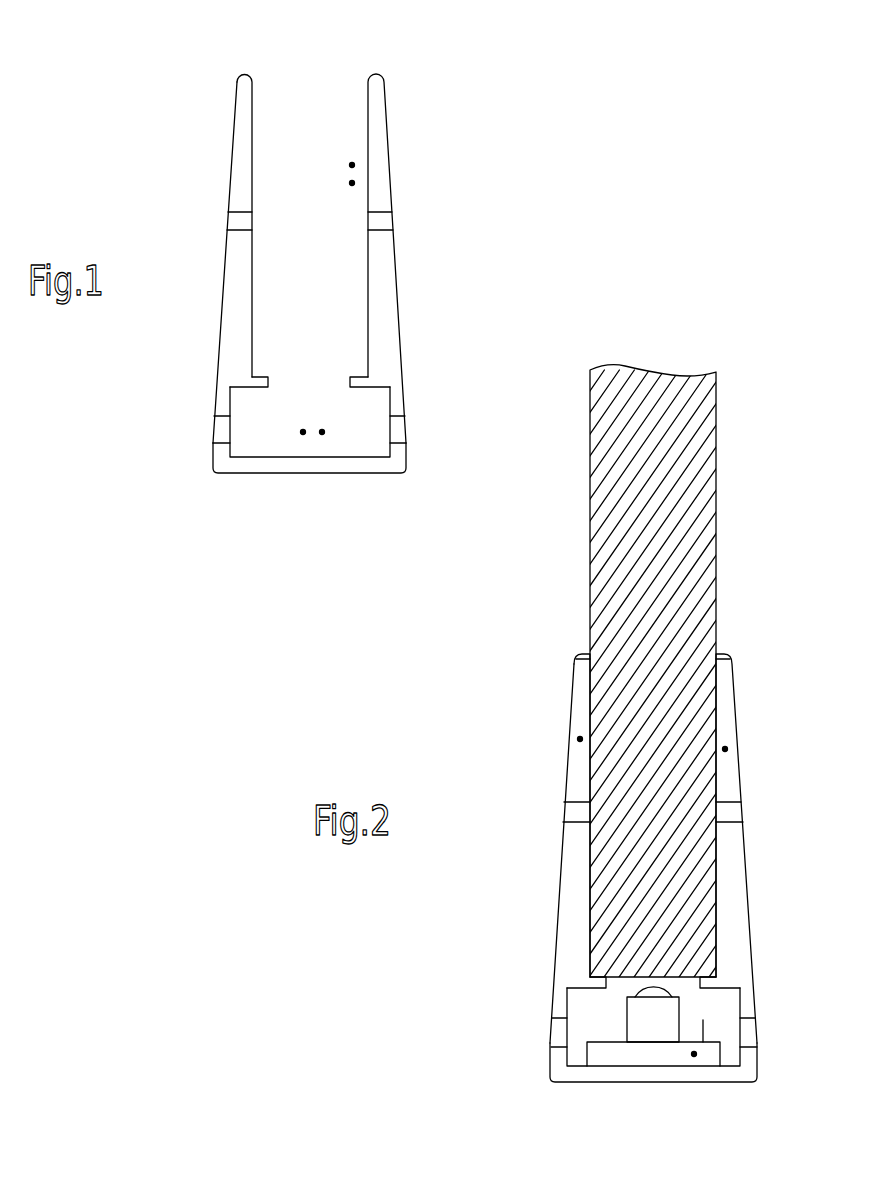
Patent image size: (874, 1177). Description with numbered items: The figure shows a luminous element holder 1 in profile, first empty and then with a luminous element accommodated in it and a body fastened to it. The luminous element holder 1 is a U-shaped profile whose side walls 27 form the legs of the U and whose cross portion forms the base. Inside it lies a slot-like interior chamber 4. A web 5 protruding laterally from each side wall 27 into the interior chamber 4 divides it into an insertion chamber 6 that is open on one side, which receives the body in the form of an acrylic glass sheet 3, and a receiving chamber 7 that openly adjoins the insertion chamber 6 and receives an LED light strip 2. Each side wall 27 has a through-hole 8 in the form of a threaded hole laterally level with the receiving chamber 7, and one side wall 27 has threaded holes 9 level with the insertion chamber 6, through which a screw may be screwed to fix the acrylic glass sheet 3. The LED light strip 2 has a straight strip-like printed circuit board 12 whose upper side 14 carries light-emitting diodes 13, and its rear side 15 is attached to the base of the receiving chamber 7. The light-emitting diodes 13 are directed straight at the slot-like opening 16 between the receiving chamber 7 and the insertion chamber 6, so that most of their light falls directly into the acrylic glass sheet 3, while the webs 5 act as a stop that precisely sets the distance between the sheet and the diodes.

In FIG. 1, the luminous element holder 1 is at (509, 136).
In FIG. 2, the luminous element holder 1 is at (762, 685).
In FIG. 2, the LED light strip 2 is at (652, 1055).
In FIG. 2, the acrylic glass sheet 3 is at (700, 466).
In FIG. 1, the interior chamber 4 is at (319, 121).
In FIG. 2, the interior chamber 4 is at (703, 777).
In FIG. 1, the web 5 is at (263, 380).
In FIG. 2, the web 5 is at (600, 978).
In FIG. 1, the insertion chamber 6 is at (352, 183).
In FIG. 2, the insertion chamber 6 is at (703, 757).
In FIG. 1, the receiving chamber 7 is at (322, 432).
In FIG. 2, the receiving chamber 7 is at (607, 1038).
In FIG. 1, the through-hole 8 is at (222, 428).
In FIG. 2, the through-hole 8 is at (560, 1037).
In FIG. 1, the threaded hole 9 is at (252, 220).
In FIG. 2, the threaded hole 9 is at (565, 815).
In FIG. 2, the printed circuit board 12 is at (694, 1054).
In FIG. 2, the light-emitting diode 13 is at (647, 1027).
In FIG. 2, the upper side 14 is at (712, 1032).
In FIG. 2, the rear side 15 is at (604, 1071).
In FIG. 1, the slot-like opening 16 is at (318, 380).
In FIG. 1, the side wall 27 is at (243, 146).
In FIG. 2, the side wall 27 is at (580, 739).